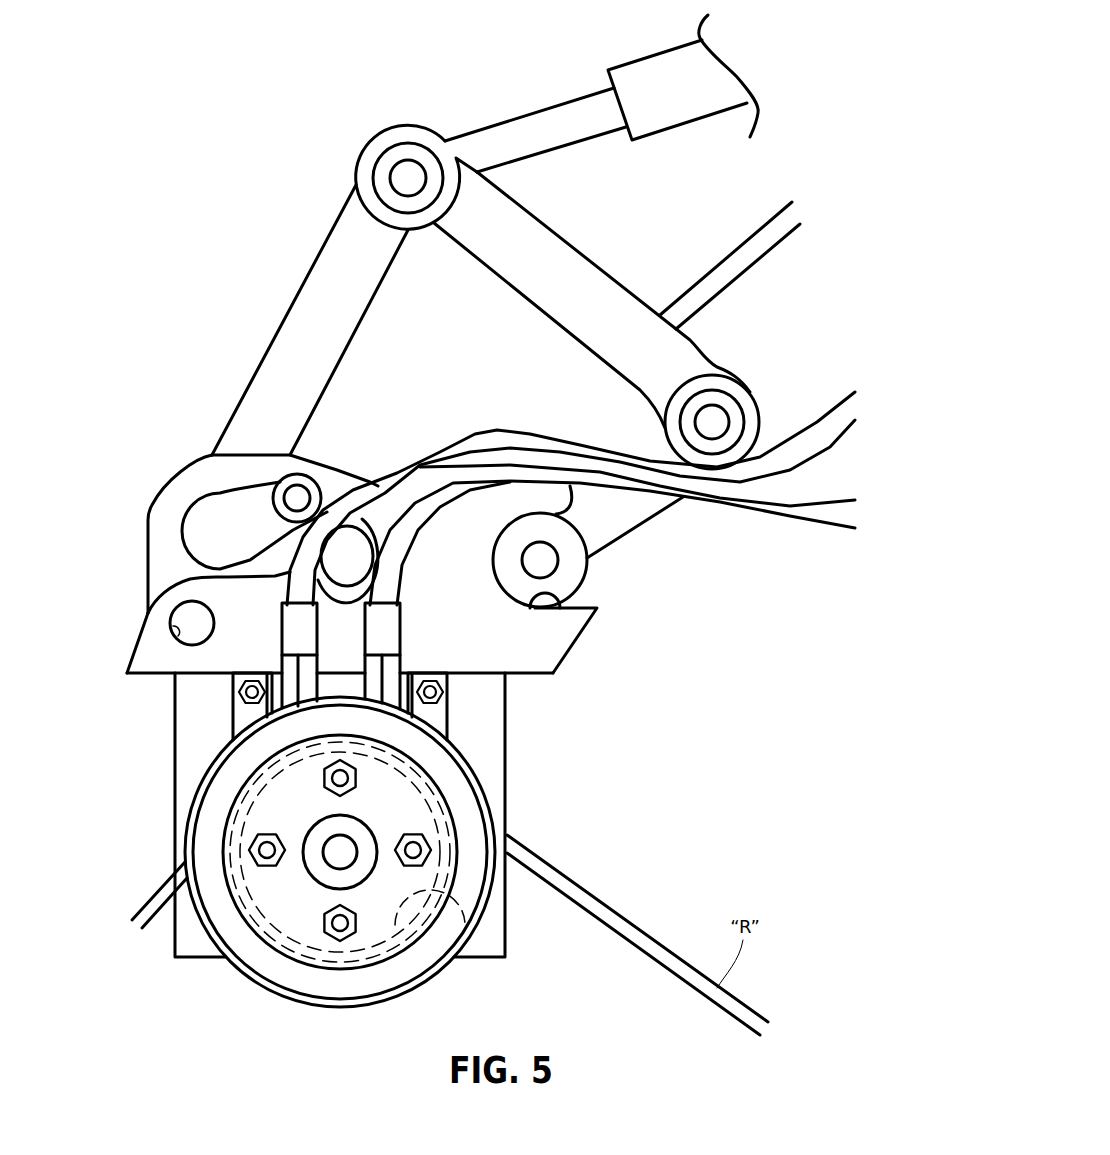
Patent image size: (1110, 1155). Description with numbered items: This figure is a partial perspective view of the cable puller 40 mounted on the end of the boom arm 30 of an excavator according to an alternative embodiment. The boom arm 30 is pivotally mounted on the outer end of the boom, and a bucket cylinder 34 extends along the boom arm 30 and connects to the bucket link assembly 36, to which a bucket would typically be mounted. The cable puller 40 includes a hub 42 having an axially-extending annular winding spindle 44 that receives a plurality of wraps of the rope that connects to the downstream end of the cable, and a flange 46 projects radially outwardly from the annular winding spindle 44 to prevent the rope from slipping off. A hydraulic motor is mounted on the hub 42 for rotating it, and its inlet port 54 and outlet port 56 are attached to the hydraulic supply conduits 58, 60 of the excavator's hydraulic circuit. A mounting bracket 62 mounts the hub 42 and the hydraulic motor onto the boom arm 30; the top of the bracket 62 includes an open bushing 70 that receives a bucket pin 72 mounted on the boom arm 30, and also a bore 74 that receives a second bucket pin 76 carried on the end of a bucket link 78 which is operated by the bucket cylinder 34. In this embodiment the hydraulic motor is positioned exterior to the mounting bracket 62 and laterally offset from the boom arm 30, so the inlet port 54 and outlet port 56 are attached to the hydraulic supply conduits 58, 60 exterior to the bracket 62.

The boom arm 30 is at (728, 310).
The bucket cylinder 34 is at (641, 68).
The bucket link assembly 36 is at (347, 128).
The cable puller 40 is at (123, 590).
The hub 42 is at (465, 790).
The annular winding spindle 44 is at (475, 920).
The flange 46 is at (340, 1007).
The inlet port 54 is at (382, 630).
The outlet port 56 is at (297, 638).
The hydraulic supply conduit 58 is at (763, 513).
The hydraulic supply conduit 60 is at (490, 432).
The mounting bracket 62 is at (156, 821).
The open bushing 70 is at (560, 603).
The bucket pin 72 is at (573, 575).
The bore 74 is at (175, 633).
The bucket pin 76 is at (192, 612).
The bucket link 78 is at (287, 347).